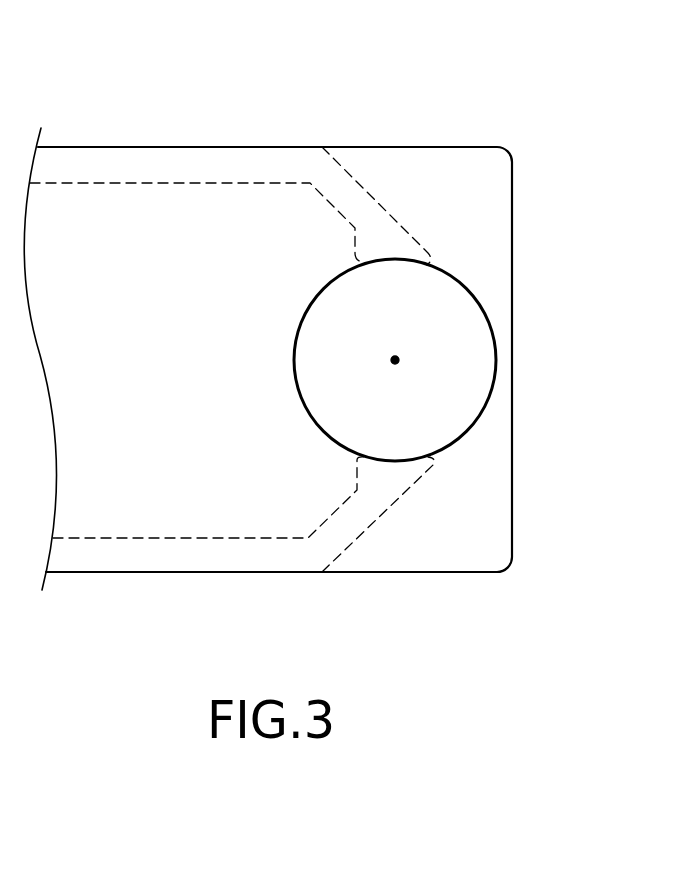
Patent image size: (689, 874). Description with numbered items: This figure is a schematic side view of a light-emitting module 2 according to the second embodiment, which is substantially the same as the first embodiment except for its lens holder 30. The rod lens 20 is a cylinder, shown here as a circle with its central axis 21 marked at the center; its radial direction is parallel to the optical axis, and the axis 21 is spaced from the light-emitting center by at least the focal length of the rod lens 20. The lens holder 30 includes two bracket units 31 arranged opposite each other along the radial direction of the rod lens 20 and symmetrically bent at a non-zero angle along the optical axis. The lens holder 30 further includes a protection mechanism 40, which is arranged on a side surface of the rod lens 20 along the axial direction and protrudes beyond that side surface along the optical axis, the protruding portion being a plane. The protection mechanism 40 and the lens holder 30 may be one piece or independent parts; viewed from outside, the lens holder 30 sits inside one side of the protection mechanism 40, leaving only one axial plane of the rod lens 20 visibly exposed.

The light-emitting module 2 is at (277, 28).
The rod lens 20 is at (467, 321).
The axis 21 is at (399, 362).
The lens holder 30 is at (395, 202).
The bracket unit 31 is at (197, 158).
The protection mechanism 40 is at (454, 158).